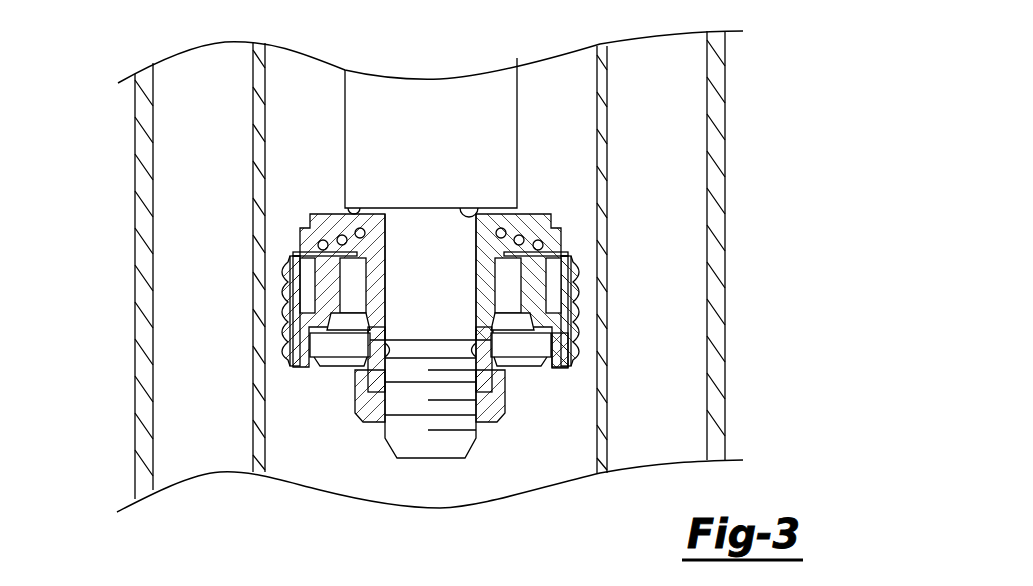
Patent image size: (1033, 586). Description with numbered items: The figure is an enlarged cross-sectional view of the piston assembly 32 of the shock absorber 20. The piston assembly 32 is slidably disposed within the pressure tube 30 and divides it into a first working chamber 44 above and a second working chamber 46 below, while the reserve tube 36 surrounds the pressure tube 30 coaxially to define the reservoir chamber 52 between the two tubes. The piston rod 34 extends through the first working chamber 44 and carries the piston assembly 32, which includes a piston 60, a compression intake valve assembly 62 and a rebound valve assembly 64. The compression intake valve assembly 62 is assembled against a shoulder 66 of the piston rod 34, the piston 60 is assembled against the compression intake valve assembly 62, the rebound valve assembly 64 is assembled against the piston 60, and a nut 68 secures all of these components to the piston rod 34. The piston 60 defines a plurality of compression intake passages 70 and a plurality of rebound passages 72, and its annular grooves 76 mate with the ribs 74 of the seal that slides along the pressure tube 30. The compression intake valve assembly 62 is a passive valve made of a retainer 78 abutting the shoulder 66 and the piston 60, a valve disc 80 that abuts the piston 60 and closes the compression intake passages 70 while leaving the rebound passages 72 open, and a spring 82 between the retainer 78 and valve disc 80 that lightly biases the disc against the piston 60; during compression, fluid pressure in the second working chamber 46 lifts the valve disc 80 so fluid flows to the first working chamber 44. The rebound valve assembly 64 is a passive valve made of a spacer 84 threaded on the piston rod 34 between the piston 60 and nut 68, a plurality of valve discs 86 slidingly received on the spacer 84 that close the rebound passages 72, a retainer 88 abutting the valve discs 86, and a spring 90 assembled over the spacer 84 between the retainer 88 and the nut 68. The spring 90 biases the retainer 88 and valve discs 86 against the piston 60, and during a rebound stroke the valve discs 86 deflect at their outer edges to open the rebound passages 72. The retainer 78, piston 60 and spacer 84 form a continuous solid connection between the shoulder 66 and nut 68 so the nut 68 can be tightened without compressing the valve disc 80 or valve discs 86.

The shock absorber 20 is at (816, 104).
The pressure tube 30 is at (257, 73).
The piston assembly 32 is at (309, 460).
The piston rod 34 is at (450, 88).
The reserve tube 36 is at (141, 183).
The first working chamber 44 is at (580, 112).
The second working chamber 46 is at (407, 483).
The reservoir chamber 52 is at (204, 373).
The piston 60 is at (292, 302).
The compression intake valve assembly 62 is at (294, 226).
The rebound valve assembly 64 is at (523, 396).
The shoulder 66 is at (466, 206).
The nut 68 is at (493, 412).
The compression intake passages 70 is at (557, 277).
The rebound passages 72 is at (508, 303).
The ribs 74 is at (280, 338).
The annular grooves 76 is at (292, 257).
The retainer 78 is at (540, 212).
The valve disc 80 is at (567, 250).
The spring 82 is at (468, 262).
The spacer 84 is at (380, 378).
The valve discs 86 is at (510, 345).
The retainer 88 is at (323, 346).
The spring 90 is at (530, 363).